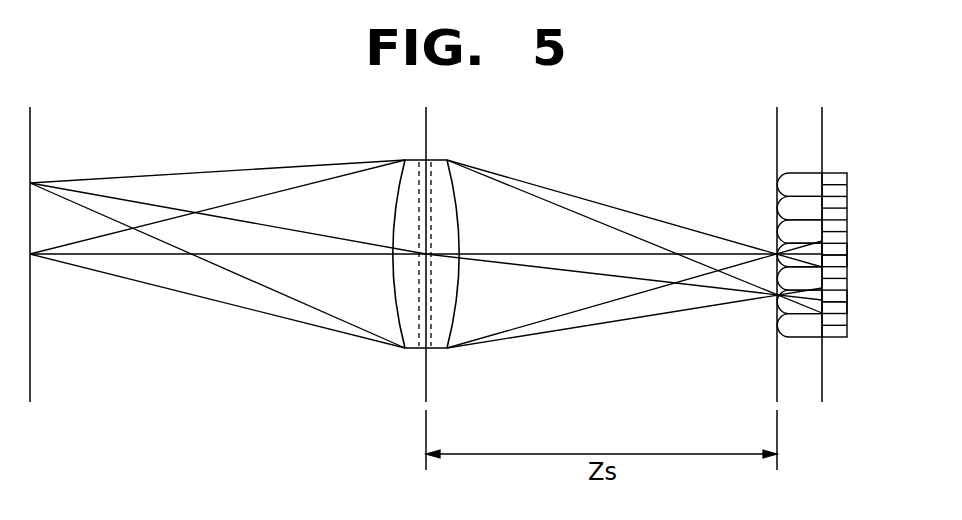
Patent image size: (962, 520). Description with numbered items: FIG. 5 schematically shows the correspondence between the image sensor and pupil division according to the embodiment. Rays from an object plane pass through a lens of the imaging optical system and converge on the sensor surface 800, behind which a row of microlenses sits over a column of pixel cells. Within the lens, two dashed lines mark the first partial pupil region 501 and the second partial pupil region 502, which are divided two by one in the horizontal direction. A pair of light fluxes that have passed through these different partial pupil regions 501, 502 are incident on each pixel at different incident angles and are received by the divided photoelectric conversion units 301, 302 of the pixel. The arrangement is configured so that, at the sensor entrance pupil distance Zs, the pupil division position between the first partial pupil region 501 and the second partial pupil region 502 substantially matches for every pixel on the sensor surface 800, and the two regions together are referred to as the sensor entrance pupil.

The image sensor 800 is at (777, 116).
The first photoelectric conversion unit 301 is at (847, 246).
The second photoelectric conversion unit 302 is at (847, 258).
The first partial pupil region 501 is at (436, 326).
The second partial pupil region 502 is at (438, 189).